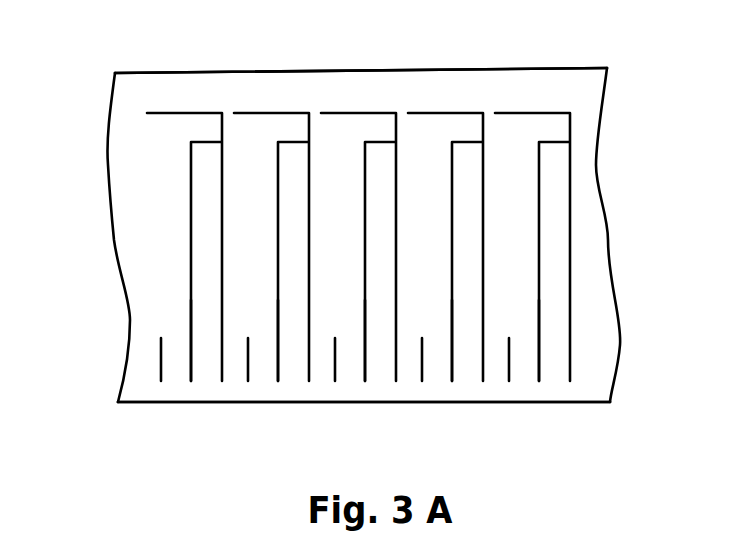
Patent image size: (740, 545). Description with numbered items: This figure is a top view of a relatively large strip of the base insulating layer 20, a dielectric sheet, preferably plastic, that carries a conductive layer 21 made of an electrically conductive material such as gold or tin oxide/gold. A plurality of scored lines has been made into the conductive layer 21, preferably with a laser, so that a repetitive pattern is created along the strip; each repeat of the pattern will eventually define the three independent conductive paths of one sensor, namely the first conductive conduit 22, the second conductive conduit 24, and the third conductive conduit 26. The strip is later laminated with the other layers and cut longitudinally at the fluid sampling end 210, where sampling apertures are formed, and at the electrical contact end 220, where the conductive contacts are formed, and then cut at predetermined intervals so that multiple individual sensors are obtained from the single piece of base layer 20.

The base insulating layer 20 is at (440, 68).
The conductive layer 21 is at (137, 212).
The fluid sampling end 210 is at (243, 65).
The electrical contact end 220 is at (173, 410).
The first conductive conduit 22 is at (320, 358).
The second conductive conduit 24 is at (381, 363).
The third conductive conduit 26 is at (348, 358).